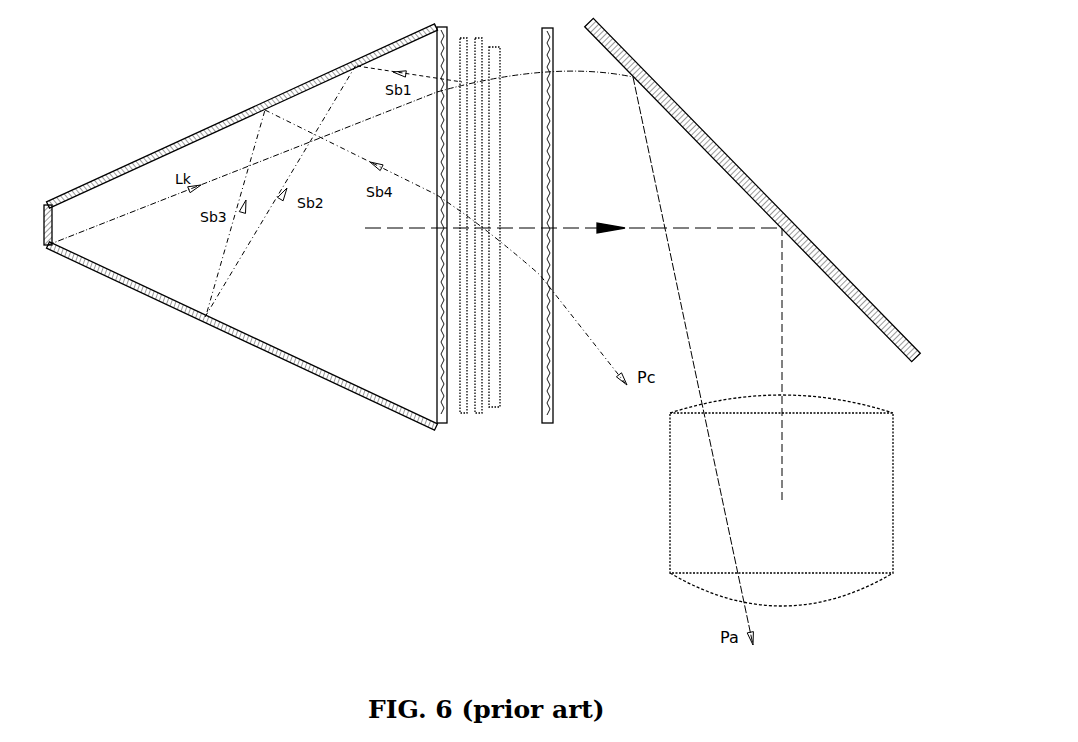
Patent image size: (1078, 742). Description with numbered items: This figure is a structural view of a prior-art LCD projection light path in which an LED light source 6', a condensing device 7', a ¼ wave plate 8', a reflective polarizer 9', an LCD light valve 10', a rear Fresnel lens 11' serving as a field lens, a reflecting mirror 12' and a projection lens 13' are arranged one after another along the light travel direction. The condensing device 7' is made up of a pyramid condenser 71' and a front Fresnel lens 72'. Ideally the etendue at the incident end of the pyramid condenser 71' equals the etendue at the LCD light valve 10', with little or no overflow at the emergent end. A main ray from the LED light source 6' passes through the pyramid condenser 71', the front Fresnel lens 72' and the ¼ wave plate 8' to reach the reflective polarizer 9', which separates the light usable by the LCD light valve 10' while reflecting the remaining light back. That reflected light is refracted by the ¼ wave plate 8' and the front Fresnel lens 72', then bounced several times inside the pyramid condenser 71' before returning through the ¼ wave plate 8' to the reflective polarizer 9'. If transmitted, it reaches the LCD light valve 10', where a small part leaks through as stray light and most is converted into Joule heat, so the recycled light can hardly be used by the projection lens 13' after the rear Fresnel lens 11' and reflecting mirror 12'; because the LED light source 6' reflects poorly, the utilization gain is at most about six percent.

The LED light source 6' is at (84, 170).
The condensing device 7' is at (247, 249).
The pyramid condenser 71' is at (242, 231).
The front Fresnel lens 72' is at (340, 250).
The ¼ wave plate 8' is at (426, 287).
The reflective polarizer 9' is at (481, 295).
The LCD light valve 10' is at (533, 287).
The rear Fresnel lens 11' is at (589, 248).
The reflecting mirror 12' is at (753, 206).
The projection lens 13' is at (734, 500).